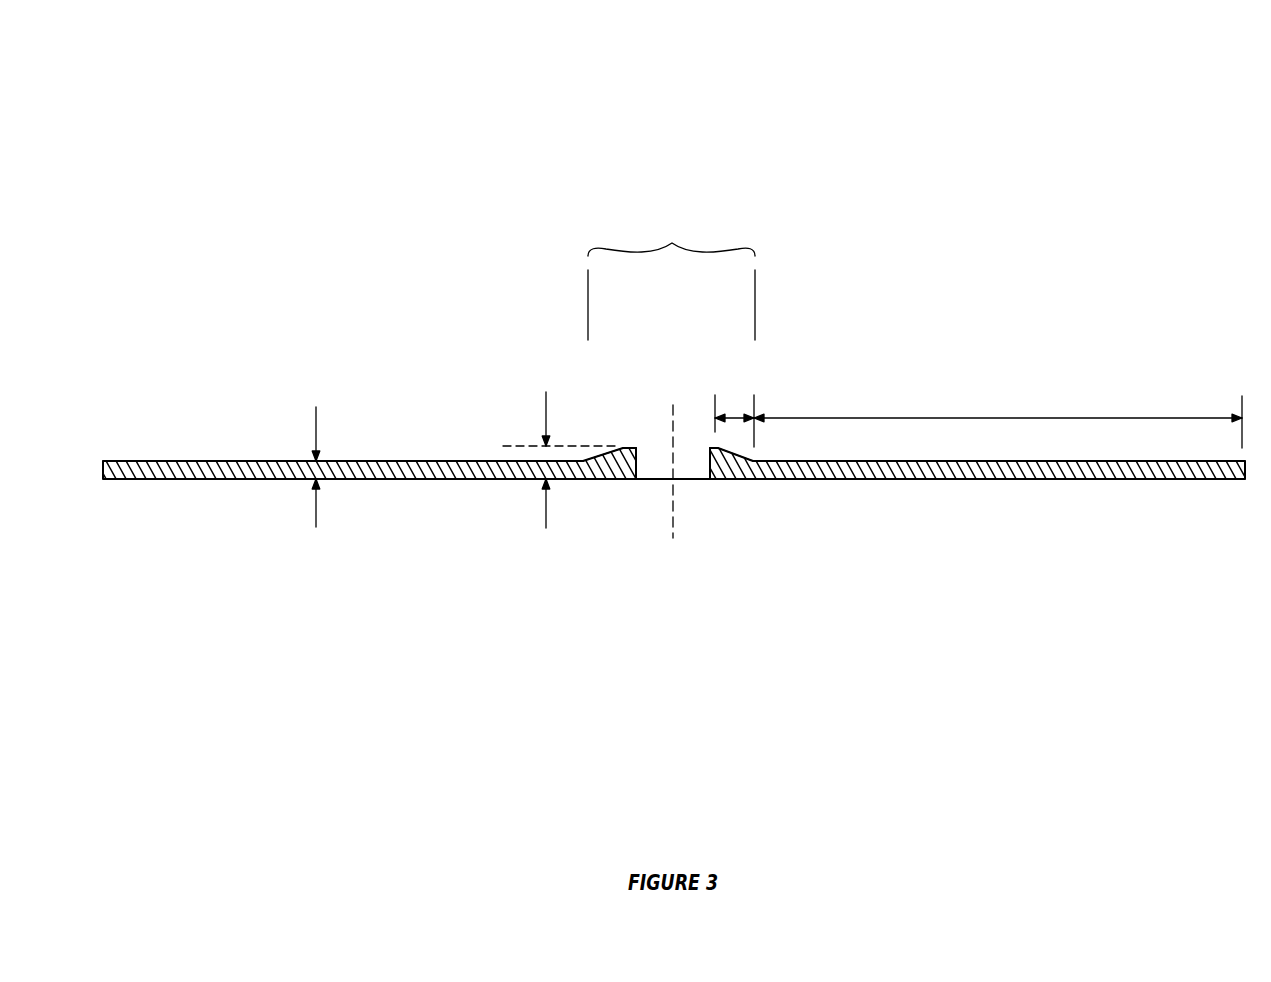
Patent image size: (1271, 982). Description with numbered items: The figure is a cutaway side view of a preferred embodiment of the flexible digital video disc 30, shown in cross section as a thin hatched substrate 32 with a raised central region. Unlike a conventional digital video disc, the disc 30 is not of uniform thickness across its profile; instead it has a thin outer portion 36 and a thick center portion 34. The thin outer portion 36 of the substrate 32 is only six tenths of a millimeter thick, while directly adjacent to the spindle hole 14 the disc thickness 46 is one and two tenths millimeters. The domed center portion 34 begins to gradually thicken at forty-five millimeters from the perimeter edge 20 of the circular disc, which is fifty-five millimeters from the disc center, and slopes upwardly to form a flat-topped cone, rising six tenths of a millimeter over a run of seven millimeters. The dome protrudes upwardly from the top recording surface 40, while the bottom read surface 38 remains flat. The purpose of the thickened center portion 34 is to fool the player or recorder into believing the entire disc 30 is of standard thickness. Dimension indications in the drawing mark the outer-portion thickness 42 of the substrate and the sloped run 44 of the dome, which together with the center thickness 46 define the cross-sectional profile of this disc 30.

The hole 14 is at (656, 468).
The perimeter edge 20 is at (100, 487).
The flexible digital video disc 30 is at (1132, 171).
The substrate 32 is at (810, 478).
The thick center portion 34 is at (672, 246).
The thin outer portion 36 is at (965, 418).
The bottom (read) surface 38 is at (973, 490).
The top (recording) surface 40 is at (142, 459).
The panel thickness 42 is at (360, 478).
The collar ramp width 44 is at (735, 416).
The disc thickness 46 is at (548, 456).